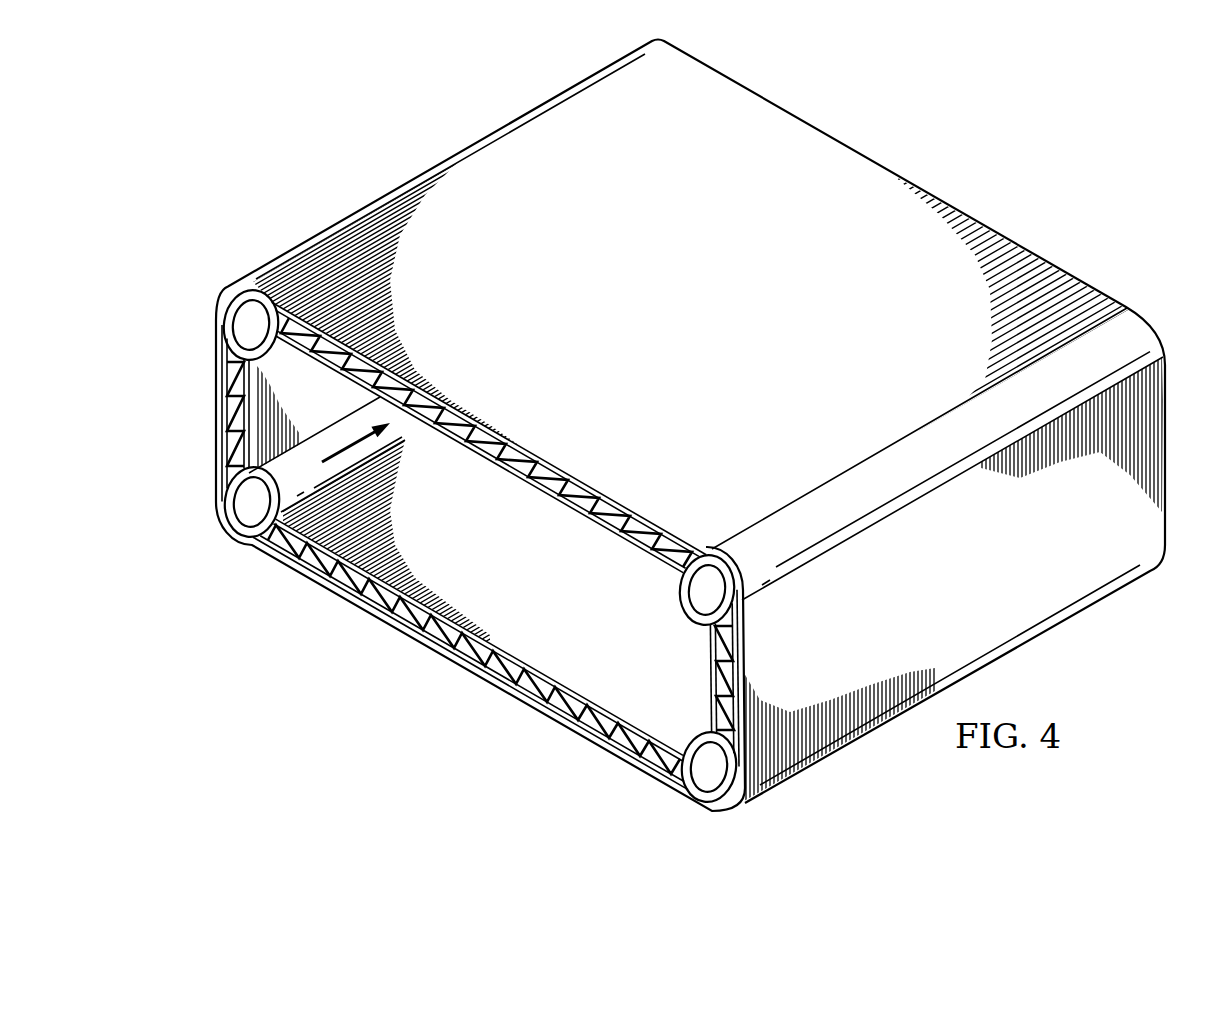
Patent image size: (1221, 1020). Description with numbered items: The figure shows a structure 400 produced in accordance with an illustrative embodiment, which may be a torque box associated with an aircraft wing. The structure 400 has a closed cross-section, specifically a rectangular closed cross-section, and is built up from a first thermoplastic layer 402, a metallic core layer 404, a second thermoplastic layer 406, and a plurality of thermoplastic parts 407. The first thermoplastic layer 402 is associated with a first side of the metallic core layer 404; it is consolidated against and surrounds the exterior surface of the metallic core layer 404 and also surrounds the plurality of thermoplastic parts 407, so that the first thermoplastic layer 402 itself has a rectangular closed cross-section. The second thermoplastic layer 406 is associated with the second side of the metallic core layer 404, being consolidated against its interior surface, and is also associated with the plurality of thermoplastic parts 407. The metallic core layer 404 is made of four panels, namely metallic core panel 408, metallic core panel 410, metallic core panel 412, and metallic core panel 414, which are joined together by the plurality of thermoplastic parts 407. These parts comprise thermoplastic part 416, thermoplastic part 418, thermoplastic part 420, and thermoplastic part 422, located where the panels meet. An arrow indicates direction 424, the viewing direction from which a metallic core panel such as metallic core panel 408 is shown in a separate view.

The structure 400 is at (368, 150).
The first thermoplastic layer 402 is at (711, 311).
The metallic core layer 404 is at (398, 634).
The second thermoplastic layer 406 is at (566, 601).
The plurality of thermoplastic parts 407 is at (471, 549).
The metallic core panel 408 is at (497, 477).
The metallic core panel 410 is at (740, 670).
The metallic core panel 412 is at (518, 701).
The metallic core panel 414 is at (226, 428).
The thermoplastic part 416 is at (226, 331).
The thermoplastic part 418 is at (681, 601).
The thermoplastic part 420 is at (690, 736).
The thermoplastic part 422 is at (226, 495).
The direction 424 is at (338, 447).